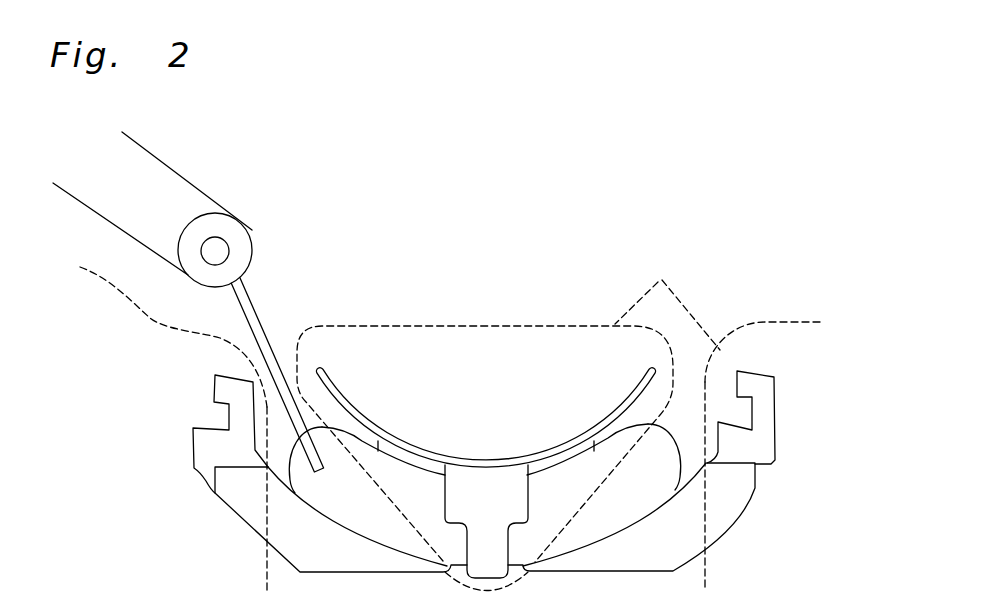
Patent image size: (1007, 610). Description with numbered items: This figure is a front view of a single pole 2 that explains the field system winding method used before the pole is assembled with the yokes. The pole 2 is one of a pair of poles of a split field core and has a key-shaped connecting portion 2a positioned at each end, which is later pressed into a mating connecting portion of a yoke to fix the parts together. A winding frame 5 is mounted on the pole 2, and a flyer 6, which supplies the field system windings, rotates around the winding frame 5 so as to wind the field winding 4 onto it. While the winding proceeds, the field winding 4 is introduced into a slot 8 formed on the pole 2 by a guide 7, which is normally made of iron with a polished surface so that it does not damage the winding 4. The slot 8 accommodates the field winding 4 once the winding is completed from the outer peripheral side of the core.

The pole 2 is at (350, 582).
The key-shaped connecting portion 2a is at (213, 447).
The field winding 4 is at (255, 308).
The winding frame 5 is at (482, 515).
The flyer 6 is at (137, 182).
The guide 7 is at (441, 420).
The slot 8 is at (678, 412).